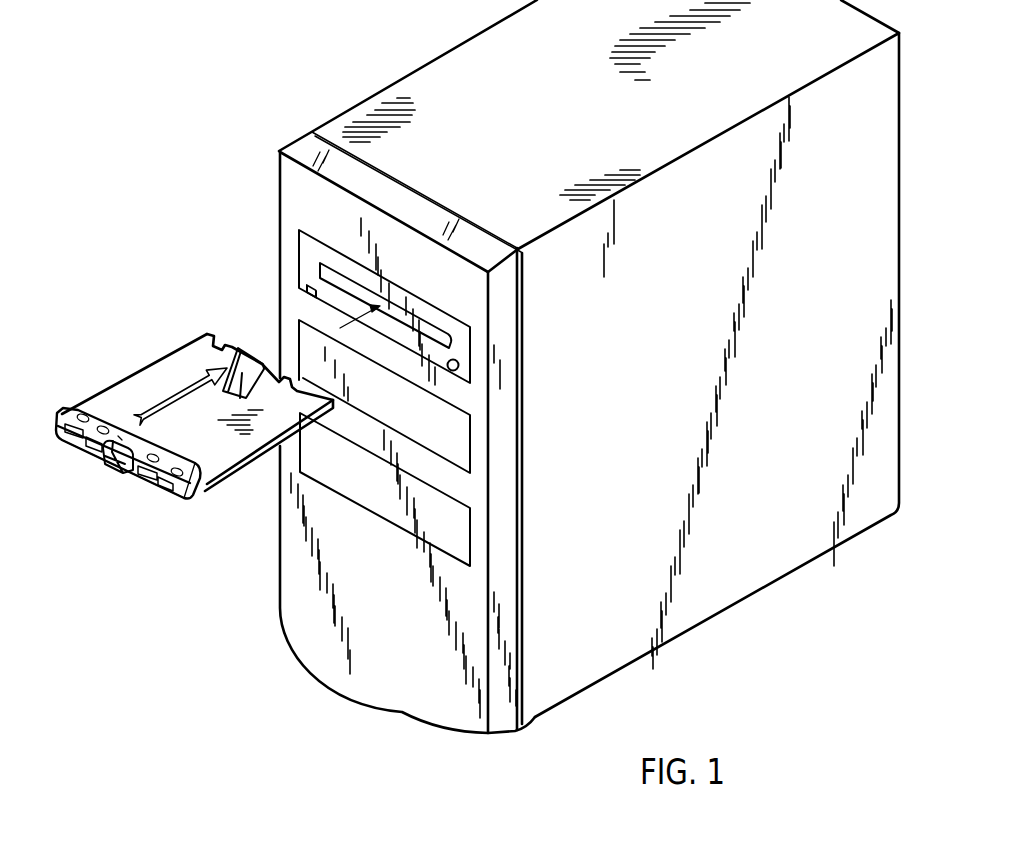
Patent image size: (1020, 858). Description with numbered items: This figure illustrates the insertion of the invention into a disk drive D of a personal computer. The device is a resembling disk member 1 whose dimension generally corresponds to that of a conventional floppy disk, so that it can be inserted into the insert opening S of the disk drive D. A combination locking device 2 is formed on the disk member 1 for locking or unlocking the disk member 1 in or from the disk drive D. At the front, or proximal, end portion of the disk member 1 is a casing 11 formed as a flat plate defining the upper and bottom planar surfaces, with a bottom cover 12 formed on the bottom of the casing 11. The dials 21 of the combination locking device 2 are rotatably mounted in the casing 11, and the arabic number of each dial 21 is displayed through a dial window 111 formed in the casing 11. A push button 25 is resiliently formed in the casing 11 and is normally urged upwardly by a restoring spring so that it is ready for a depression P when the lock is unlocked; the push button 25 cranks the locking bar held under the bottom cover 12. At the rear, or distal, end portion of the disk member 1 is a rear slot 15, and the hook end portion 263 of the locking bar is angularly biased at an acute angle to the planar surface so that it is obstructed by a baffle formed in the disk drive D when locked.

The disk drive D is at (392, 80).
The insert opening S is at (320, 267).
The resembling disk member 1 is at (197, 375).
The hook end portion 263 is at (238, 348).
The rear slot 15 is at (273, 378).
The combination locking device 2 is at (138, 444).
The dial window 111 is at (83, 412).
The dial 21 is at (92, 453).
The push button 25 is at (115, 478).
The depression P is at (117, 438).
The bottom cover 12 is at (178, 500).
The casing 11 is at (203, 501).